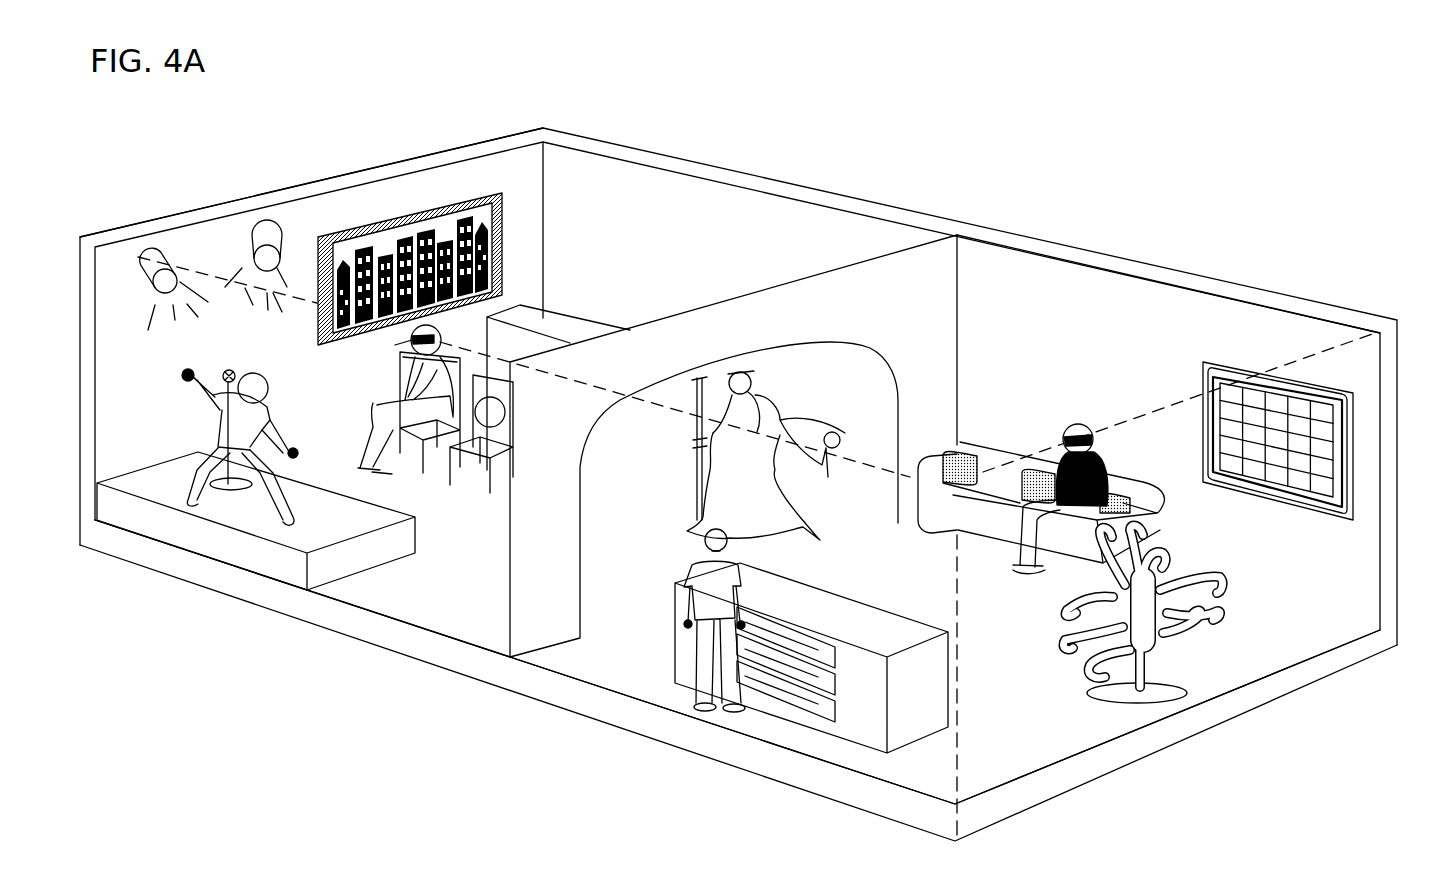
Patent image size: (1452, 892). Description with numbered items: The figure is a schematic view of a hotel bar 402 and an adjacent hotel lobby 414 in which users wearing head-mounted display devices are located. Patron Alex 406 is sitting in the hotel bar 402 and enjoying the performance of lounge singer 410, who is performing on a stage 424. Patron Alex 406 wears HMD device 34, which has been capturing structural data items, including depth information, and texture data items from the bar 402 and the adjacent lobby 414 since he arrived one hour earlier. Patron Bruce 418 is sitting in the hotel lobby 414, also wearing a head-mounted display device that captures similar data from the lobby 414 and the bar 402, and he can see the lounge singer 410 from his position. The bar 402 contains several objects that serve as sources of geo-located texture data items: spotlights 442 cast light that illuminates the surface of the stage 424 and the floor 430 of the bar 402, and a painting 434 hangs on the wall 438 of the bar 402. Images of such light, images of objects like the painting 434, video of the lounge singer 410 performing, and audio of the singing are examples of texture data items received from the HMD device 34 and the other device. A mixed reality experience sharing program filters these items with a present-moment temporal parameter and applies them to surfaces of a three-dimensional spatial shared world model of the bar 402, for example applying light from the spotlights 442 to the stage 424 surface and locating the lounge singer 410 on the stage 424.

The hotel bar 402 is at (681, 203).
The wall 438 is at (455, 178).
The floor 430 is at (422, 594).
The painting 434 is at (505, 252).
The spotlights 442 is at (170, 247).
The patron Alex 406 is at (401, 399).
The HMD device 34 is at (401, 349).
The lounge singer 410 is at (228, 432).
The stage 424 is at (390, 512).
The hotel lobby 414 is at (1077, 297).
The patron Bruce 418 is at (1097, 463).